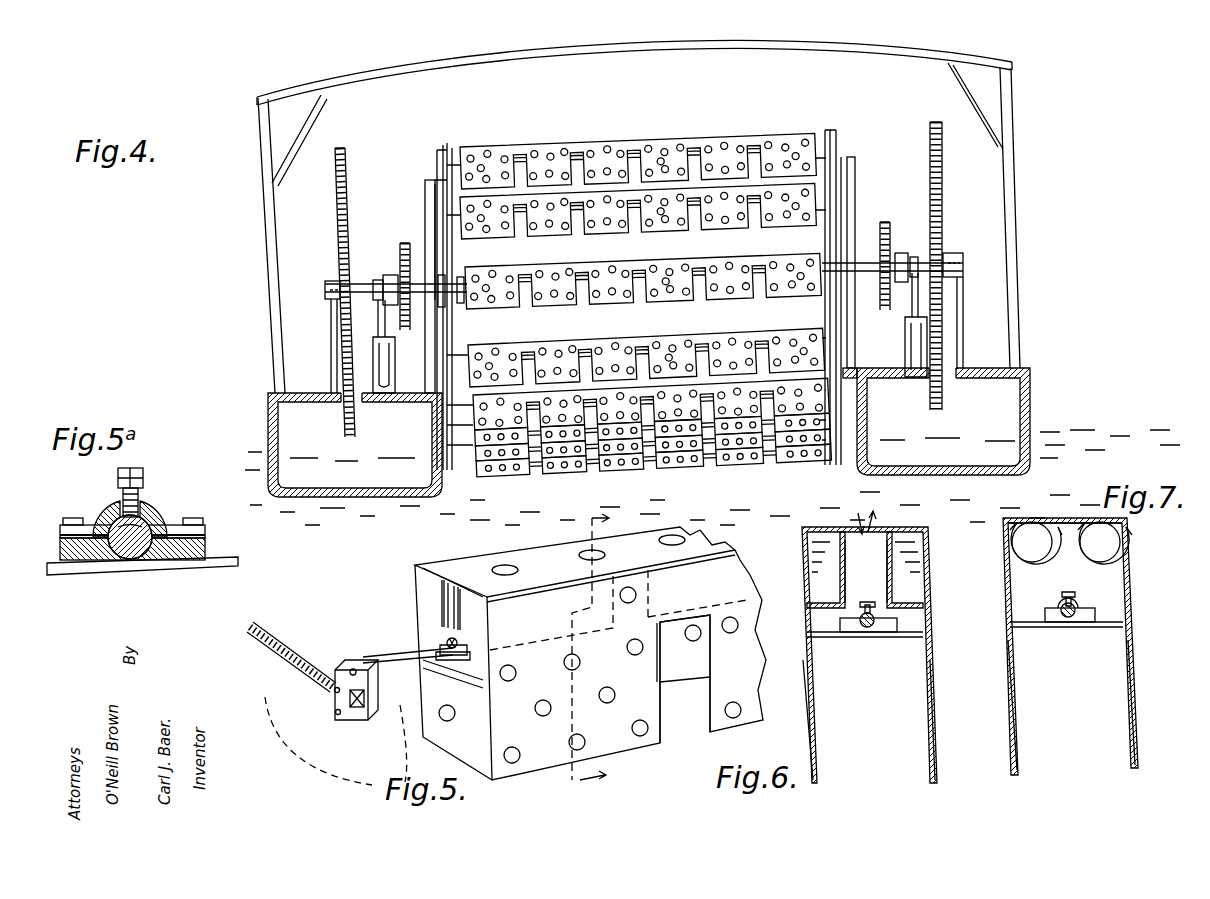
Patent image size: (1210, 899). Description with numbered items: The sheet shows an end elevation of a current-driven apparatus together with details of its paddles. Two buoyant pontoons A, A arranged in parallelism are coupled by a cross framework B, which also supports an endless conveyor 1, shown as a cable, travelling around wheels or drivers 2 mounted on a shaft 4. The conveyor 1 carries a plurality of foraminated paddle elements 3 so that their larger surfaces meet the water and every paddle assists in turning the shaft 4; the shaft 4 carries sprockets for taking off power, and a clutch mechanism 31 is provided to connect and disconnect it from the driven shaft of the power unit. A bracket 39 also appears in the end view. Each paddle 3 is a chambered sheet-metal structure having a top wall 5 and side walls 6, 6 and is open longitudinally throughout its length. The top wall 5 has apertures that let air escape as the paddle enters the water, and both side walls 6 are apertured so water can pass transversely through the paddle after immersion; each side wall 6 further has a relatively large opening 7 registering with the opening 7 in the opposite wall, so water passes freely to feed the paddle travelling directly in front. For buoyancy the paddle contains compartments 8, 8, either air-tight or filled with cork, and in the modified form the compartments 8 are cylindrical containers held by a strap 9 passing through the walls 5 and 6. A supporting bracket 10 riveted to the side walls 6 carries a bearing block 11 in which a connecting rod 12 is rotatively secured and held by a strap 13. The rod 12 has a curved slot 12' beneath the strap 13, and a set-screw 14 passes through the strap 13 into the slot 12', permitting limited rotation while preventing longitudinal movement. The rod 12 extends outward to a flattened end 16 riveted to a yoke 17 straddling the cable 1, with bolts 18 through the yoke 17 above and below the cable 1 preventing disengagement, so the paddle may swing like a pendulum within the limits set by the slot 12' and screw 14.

In FIG. 4, the endless conveyor 1 is at (445, 148).
In FIG. 4, the wheels or drivers 2 is at (425, 202).
In FIG. 4, the foraminated paddle element 3 is at (733, 137).
In FIG. 5, the foraminated paddle element 3 is at (404, 588).
In FIG. 6, the foraminated paddle element 3 is at (942, 656).
In FIG. 7, the foraminated paddle element 3 is at (1148, 711).
In FIG. 4, the shaft 4 is at (414, 278).
In FIG. 6, the shaft 4 is at (840, 528).
In FIG. 5, the top wall 5 is at (508, 565).
In FIG. 7, the top wall 5 is at (1060, 530).
In FIG. 5, the side wall 6 is at (403, 688).
In FIG. 6, the side wall 6 is at (935, 690).
In FIG. 7, the side wall 6 is at (1136, 677).
In FIG. 5, the opening 7 is at (694, 718).
In FIG. 5, the compartment 8 is at (470, 620).
In FIG. 6, the compartment 8 is at (895, 578).
In FIG. 7, the compartment 8 is at (1037, 553).
In FIG. 7, the strap 9 is at (1080, 517).
In FIG. 5A, the supporting bracket 10 is at (196, 570).
In FIG. 6, the supporting bracket 10 is at (908, 637).
In FIG. 7, the supporting bracket 10 is at (1087, 628).
In FIG. 5A, the bearing block 11 is at (95, 560).
In FIG. 7, the bearing block 11 is at (1100, 625).
In FIG. 4, the connecting rod 12 is at (642, 288).
In FIG. 5A, the connecting rod 12 is at (128, 560).
In FIG. 5, the connecting rod 12 is at (408, 646).
In FIG. 7, the connecting rod 12 is at (1061, 632).
In FIG. 5A, the curved slot 12' is at (153, 501).
In FIG. 5A, the strap 13 is at (168, 520).
In FIG. 7, the strap 13 is at (1062, 607).
In FIG. 5A, the set-screw 14 is at (145, 478).
In FIG. 5, the set-screw 14 is at (465, 648).
In FIG. 6, the set-screw 14 is at (868, 604).
In FIG. 7, the set-screw 14 is at (1069, 594).
In FIG. 5, the flattened end 16 is at (340, 667).
In FIG. 5, the yoke 17 is at (333, 700).
In FIG. 5, the bolt 18 is at (348, 712).
In FIG. 4, the clutch mechanism 31 is at (395, 362).
In FIG. 4, the bracket 39 is at (425, 190).
In FIG. 4, the pontoon A is at (310, 400).
In FIG. 4, the cross framework B is at (272, 236).